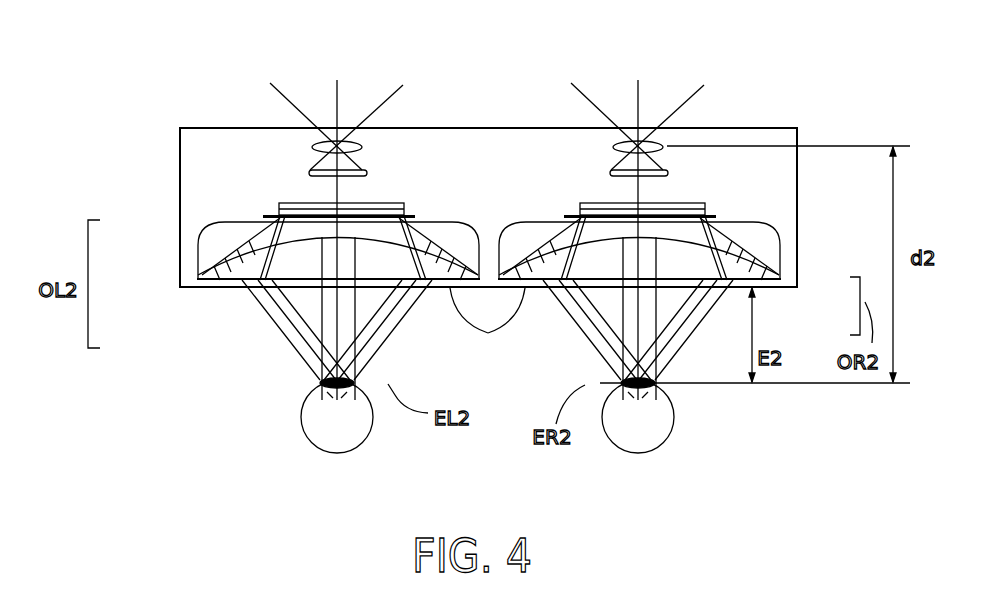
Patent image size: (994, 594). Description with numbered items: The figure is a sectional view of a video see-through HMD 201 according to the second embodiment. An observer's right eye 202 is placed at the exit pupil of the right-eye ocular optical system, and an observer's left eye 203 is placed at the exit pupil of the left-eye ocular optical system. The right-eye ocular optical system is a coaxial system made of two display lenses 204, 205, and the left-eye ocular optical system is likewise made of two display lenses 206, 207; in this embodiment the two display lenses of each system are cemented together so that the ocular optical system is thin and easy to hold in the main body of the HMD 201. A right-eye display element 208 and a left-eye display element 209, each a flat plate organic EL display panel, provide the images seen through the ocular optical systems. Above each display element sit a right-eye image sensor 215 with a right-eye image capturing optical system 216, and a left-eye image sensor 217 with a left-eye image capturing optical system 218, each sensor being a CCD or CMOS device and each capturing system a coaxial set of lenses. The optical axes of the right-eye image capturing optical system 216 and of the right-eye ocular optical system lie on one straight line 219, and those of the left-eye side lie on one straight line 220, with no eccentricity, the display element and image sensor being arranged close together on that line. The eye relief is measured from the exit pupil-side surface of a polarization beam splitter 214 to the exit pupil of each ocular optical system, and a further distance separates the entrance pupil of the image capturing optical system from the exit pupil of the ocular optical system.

The video see-through HMD 201 is at (197, 137).
The observer's right eye 202 is at (665, 420).
The observer's left eye 203 is at (362, 418).
The display lens 204 is at (767, 282).
The display lens 205 is at (772, 257).
The display lens 206 is at (218, 275).
The display lens 207 is at (200, 253).
The right-eye display element 208 is at (693, 202).
The left-eye display element 209 is at (292, 204).
The polarization beam splitter 214 is at (487, 325).
The right-eye image sensor 215 is at (655, 175).
The right-eye image capturing optical system 216 is at (667, 145).
The left-eye image sensor 217 is at (310, 175).
The left-eye image capturing optical system 218 is at (357, 145).
The straight line 219 is at (638, 80).
The straight line 220 is at (337, 80).